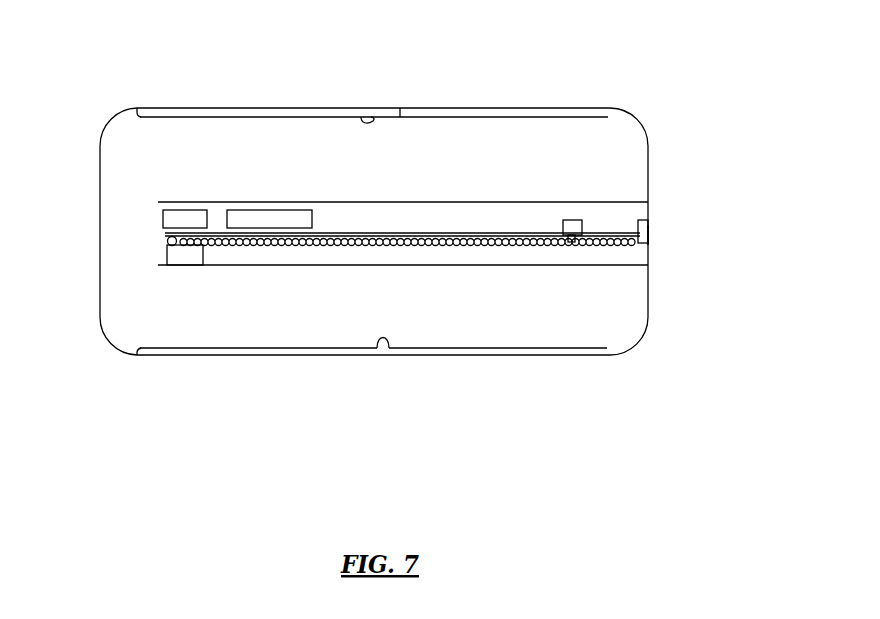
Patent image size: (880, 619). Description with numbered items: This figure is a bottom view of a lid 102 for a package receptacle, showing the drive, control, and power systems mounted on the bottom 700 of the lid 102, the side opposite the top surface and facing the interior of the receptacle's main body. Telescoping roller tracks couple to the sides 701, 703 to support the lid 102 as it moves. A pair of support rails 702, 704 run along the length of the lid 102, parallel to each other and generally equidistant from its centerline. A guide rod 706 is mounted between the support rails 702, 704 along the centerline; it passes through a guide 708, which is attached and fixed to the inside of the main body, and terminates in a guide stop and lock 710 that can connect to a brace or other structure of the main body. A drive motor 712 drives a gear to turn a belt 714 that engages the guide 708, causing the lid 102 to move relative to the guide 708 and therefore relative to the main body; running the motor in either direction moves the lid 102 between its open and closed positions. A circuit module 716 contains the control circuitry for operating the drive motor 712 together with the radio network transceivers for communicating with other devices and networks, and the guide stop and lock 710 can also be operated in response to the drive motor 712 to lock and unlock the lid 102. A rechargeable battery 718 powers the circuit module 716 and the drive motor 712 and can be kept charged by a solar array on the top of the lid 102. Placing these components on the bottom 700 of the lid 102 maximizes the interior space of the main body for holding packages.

The lid 102 is at (267, 108).
The bottom 700 is at (400, 128).
The side 701 is at (361, 117).
The support rail 702 is at (497, 202).
The side 703 is at (388, 352).
The support rail 704 is at (453, 265).
The guide rod 706 is at (527, 232).
The guide 708 is at (573, 220).
The guide stop and lock 710 is at (650, 240).
The drive motor 712 is at (185, 265).
The belt 714 is at (303, 243).
The circuit module 716 is at (162, 216).
The rechargeable battery 718 is at (245, 208).